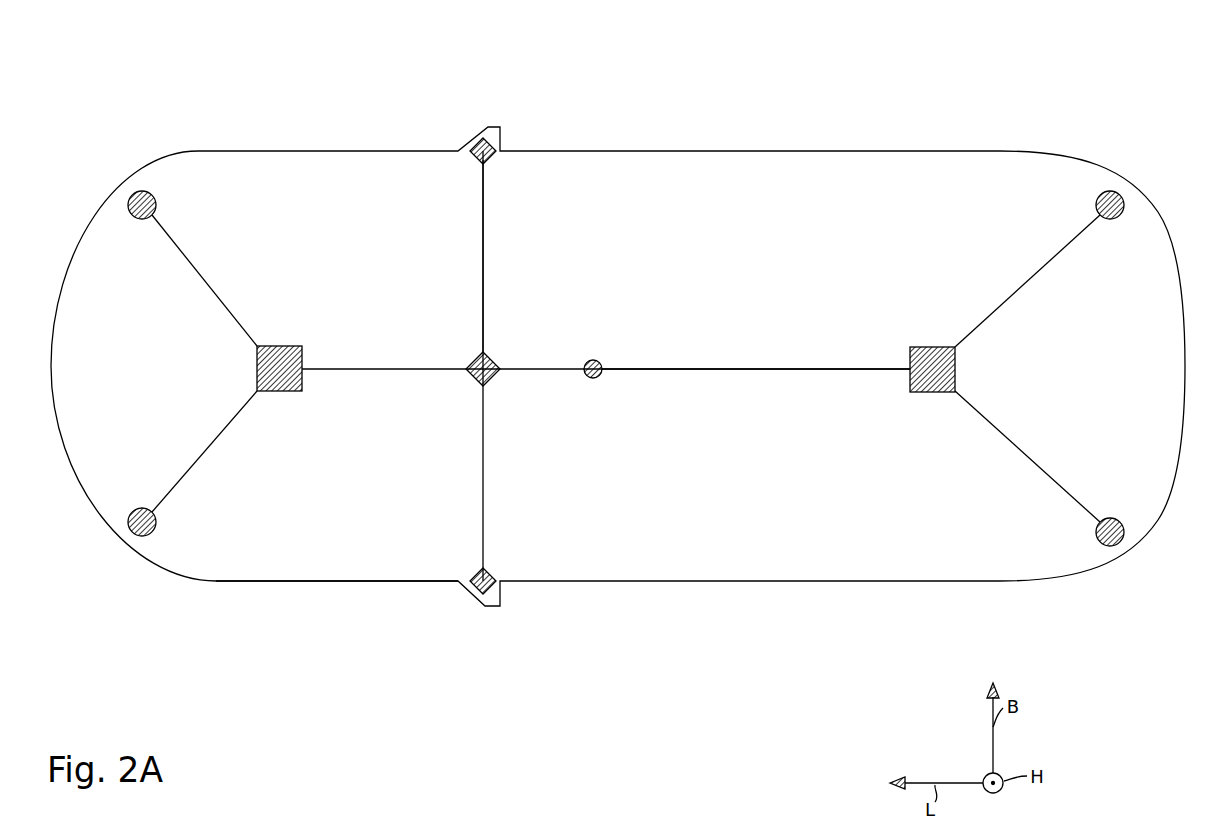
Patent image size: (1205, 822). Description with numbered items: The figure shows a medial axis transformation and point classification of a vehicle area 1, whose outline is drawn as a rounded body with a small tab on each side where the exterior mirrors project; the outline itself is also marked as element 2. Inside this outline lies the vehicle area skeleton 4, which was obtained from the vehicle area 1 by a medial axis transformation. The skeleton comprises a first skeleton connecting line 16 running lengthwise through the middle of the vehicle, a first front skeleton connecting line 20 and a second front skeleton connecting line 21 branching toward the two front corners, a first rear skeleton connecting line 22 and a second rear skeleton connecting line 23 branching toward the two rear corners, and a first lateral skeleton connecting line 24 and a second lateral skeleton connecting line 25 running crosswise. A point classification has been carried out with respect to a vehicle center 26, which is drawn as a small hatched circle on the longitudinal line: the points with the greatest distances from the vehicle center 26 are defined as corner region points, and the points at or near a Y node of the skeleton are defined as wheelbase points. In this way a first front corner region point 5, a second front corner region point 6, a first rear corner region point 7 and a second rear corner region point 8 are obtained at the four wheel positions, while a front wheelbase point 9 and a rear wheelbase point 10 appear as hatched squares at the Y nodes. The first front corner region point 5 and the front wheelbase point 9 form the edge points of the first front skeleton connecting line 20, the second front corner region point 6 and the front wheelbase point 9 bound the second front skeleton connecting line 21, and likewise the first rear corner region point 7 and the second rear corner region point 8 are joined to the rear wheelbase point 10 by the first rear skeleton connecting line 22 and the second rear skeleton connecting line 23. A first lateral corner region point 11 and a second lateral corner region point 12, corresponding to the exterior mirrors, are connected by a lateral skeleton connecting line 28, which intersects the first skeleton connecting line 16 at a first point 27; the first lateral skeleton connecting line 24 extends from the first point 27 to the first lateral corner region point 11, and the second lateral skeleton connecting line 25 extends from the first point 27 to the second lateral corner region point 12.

The vehicle area 1 is at (880, 151).
The vehicle body / chassis outline 2 is at (181, 582).
The vehicle area skeleton 4 is at (706, 369).
The first front corner region point 5 is at (142, 192).
The second front corner region point 6 is at (134, 534).
The first rear corner region point 7 is at (1112, 192).
The second rear corner region point 8 is at (1108, 547).
The front wheelbase point 9 is at (302, 347).
The rear wheelbase point 10 is at (922, 348).
The first lateral corner region point 11 is at (485, 137).
The second lateral corner region point 12 is at (479, 597).
The first skeleton connecting line 16 is at (681, 370).
The first front skeleton connecting line 20 is at (200, 272).
The second front skeleton connecting line 21 is at (238, 417).
The first rear skeleton connecting line 22 is at (1003, 300).
The second rear skeleton connecting line 23 is at (985, 433).
The first lateral skeleton connecting line 24 is at (485, 236).
The second lateral skeleton connecting line 25 is at (485, 462).
The vehicle center 26 is at (596, 360).
The first point 27 is at (470, 380).
The lateral skeleton connecting line 28 is at (481, 278).